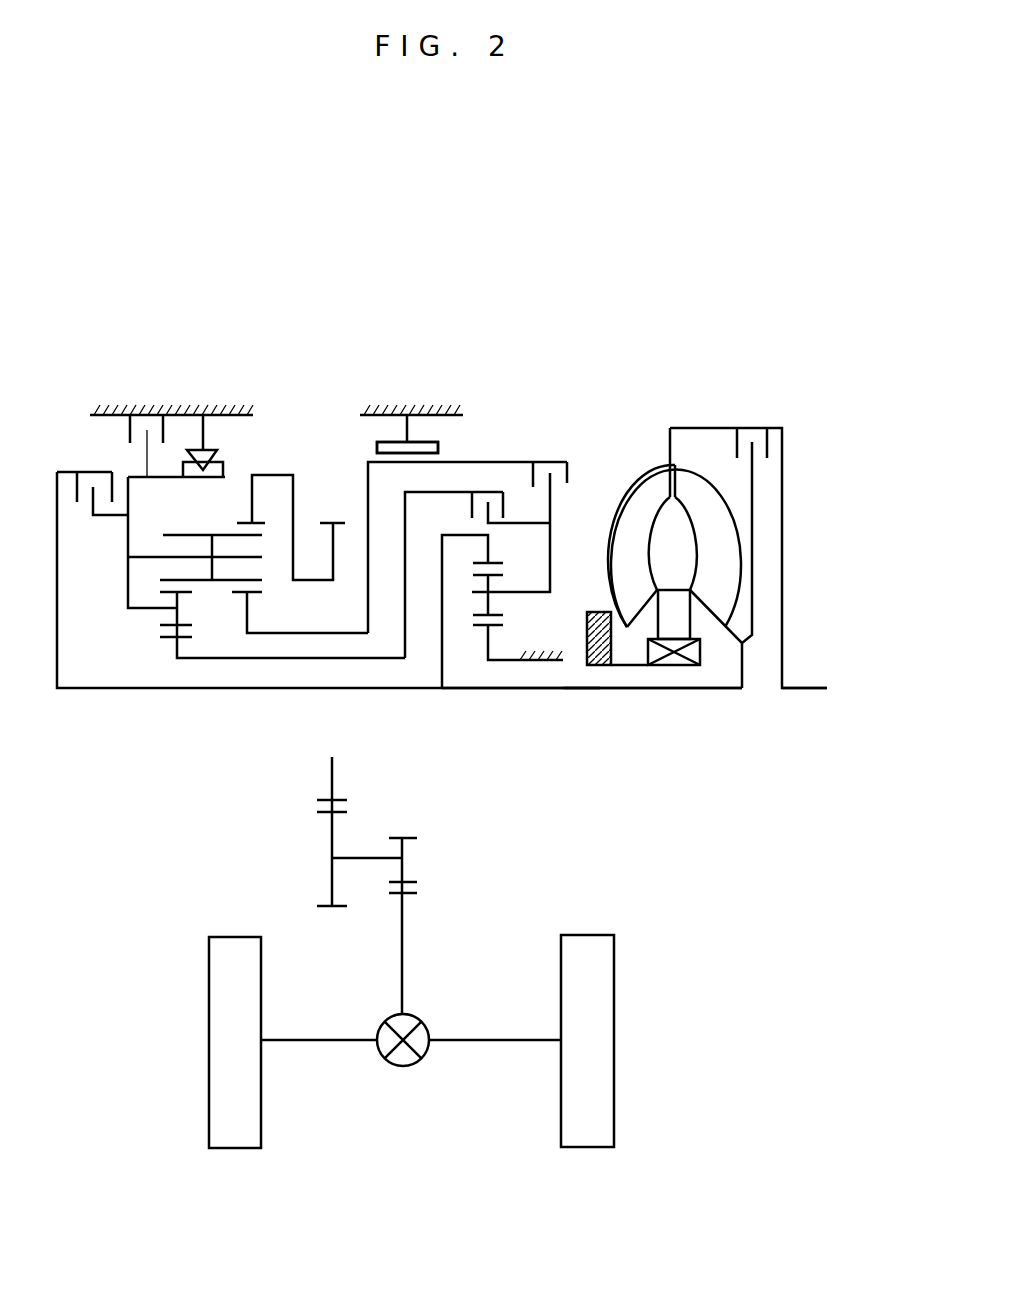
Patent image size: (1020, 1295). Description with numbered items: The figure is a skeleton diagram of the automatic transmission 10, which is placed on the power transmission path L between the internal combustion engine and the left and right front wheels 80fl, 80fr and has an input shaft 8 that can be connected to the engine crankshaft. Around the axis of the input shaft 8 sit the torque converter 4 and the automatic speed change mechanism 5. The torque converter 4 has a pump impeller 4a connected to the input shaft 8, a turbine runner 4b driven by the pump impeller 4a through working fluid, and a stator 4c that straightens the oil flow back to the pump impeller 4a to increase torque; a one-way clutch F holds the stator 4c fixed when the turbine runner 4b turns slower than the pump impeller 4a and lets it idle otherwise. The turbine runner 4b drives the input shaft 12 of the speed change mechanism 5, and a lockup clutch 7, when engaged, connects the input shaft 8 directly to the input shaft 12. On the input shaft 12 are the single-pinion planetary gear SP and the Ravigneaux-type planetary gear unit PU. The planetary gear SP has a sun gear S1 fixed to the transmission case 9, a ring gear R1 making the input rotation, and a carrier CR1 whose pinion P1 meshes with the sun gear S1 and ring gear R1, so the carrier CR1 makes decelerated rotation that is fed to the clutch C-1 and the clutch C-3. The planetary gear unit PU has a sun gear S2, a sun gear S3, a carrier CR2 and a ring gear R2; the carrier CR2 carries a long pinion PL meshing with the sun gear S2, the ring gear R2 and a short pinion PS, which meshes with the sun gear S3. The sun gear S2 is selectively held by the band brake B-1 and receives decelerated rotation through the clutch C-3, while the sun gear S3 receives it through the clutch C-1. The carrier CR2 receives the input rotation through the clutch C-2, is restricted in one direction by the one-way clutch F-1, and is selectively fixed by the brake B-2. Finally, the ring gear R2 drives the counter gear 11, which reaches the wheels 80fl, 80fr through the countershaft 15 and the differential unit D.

The automatic transmission 10 is at (451, 233).
The automatic speed change mechanism 5 is at (342, 387).
The brake B-2 is at (171, 423).
The brake B-1 is at (411, 411).
The one-way clutch F-1 is at (226, 453).
The transmission case 9 is at (445, 417).
The planetary gear unit PU is at (280, 460).
The clutch C-2 is at (93, 477).
The carrier CR2 is at (120, 565).
The ring gear R2 is at (257, 521).
The counter gear 11 is at (333, 521).
The long pinion PL is at (240, 535).
The sun gear S2 is at (252, 593).
The short pinion PS is at (168, 617).
The sun gear S3 is at (168, 640).
The clutch C-1 is at (503, 491).
The clutch C-3 is at (544, 474).
The carrier CR1 is at (560, 578).
The ring gear R1 is at (493, 562).
The pinion P1 is at (500, 615).
The planetary gear SP is at (498, 640).
The sun gear S1 is at (478, 630).
The torque converter 4 is at (700, 410).
The lockup clutch 7 is at (755, 428).
The pump impeller 4a is at (650, 480).
The turbine runner 4b is at (700, 480).
The stator 4c is at (688, 625).
The one-way clutch F is at (676, 666).
The input shaft 12 is at (642, 689).
The power transmission path L is at (572, 703).
The input shaft 8 is at (808, 690).
The countershaft 15 is at (363, 858).
The differential unit D is at (415, 1015).
The left front wheel 80fl is at (209, 970).
The right front wheel 80fr is at (614, 968).